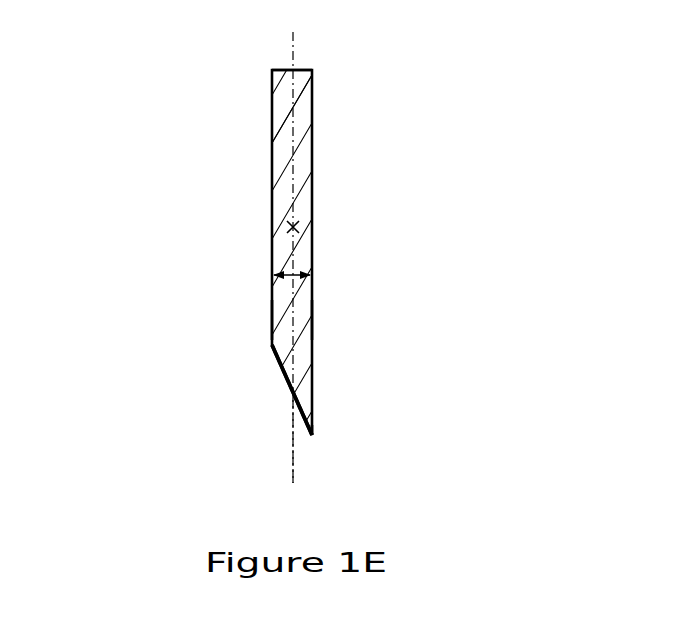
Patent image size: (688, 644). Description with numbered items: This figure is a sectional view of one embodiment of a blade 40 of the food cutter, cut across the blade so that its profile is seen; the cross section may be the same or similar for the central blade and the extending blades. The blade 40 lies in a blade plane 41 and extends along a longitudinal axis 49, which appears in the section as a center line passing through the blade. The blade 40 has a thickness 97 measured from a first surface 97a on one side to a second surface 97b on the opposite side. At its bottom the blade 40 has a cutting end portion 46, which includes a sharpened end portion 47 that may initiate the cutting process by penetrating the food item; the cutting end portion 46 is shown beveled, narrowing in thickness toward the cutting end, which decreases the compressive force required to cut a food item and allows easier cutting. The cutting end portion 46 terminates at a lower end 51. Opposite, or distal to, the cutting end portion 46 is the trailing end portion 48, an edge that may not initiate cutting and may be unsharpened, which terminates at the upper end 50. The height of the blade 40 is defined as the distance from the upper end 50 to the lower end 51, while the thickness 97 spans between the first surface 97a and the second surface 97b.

The blade 40 is at (115, 187).
The blade plane 41 is at (291, 122).
The cutting end portion 46 is at (300, 425).
The sharpened end portion 47 is at (284, 392).
The trailing end portion 48 is at (316, 79).
The longitudinal axis 49 is at (298, 228).
The upper end 50 is at (294, 66).
The lower end 51 is at (313, 440).
The thickness 97 is at (297, 270).
The first surface 97a is at (270, 318).
The second surface 97b is at (314, 318).